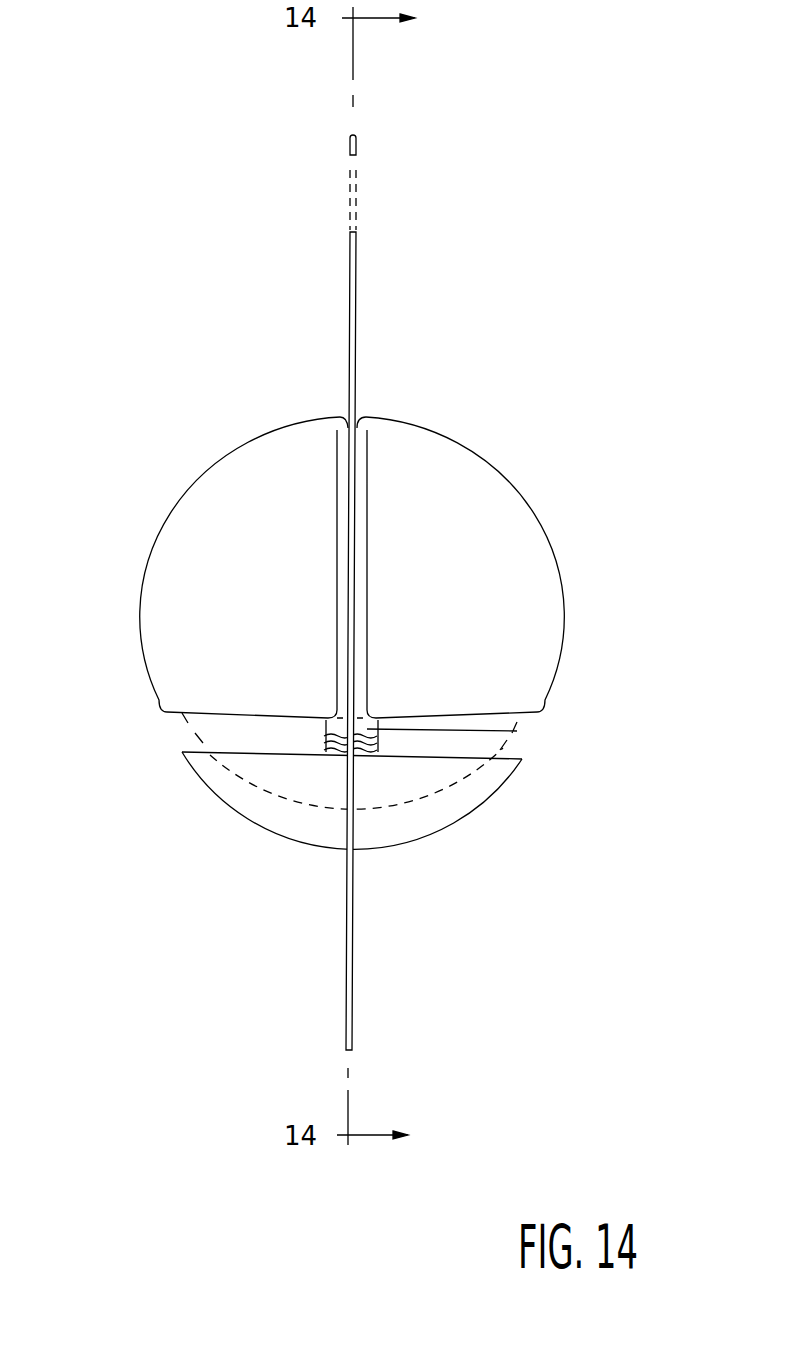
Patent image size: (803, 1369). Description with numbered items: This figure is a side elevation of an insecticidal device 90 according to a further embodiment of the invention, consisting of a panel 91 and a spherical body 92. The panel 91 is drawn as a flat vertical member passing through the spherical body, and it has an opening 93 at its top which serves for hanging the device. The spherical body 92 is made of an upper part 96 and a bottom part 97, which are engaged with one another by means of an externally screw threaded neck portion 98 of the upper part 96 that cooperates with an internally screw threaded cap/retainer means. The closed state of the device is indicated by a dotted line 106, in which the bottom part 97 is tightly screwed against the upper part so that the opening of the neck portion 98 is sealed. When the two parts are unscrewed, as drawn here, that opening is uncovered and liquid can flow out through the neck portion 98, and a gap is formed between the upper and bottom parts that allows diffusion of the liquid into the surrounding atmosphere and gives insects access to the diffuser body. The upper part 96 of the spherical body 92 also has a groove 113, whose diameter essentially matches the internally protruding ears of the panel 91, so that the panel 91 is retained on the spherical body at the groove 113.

The insecticidal device 90 is at (521, 404).
The panel 91 is at (356, 973).
The spherical body 92 is at (562, 580).
The opening 93 is at (368, 192).
The upper part 96 is at (457, 515).
The bottom part 97 is at (443, 815).
The externally screw threaded neck portion 98 is at (520, 723).
The dotted line 106 is at (195, 735).
The groove 113 is at (353, 428).